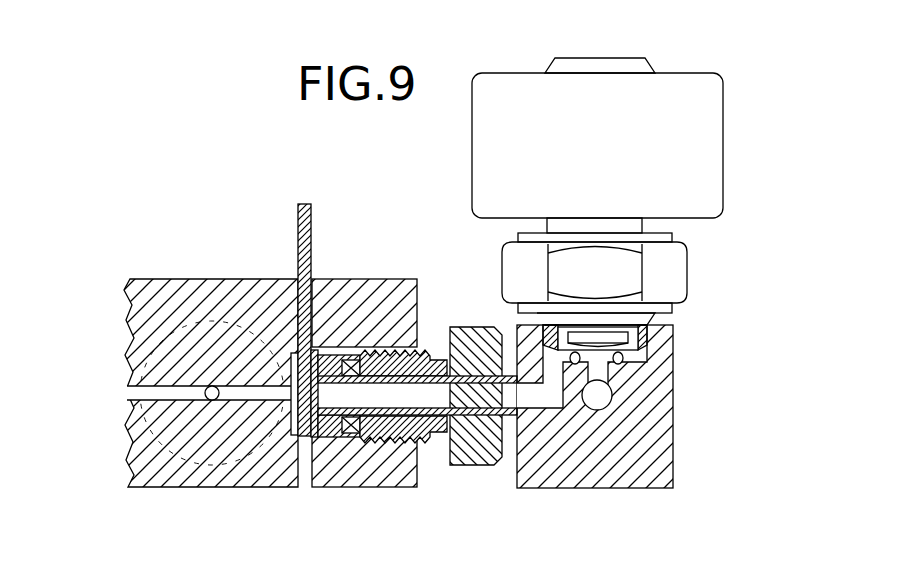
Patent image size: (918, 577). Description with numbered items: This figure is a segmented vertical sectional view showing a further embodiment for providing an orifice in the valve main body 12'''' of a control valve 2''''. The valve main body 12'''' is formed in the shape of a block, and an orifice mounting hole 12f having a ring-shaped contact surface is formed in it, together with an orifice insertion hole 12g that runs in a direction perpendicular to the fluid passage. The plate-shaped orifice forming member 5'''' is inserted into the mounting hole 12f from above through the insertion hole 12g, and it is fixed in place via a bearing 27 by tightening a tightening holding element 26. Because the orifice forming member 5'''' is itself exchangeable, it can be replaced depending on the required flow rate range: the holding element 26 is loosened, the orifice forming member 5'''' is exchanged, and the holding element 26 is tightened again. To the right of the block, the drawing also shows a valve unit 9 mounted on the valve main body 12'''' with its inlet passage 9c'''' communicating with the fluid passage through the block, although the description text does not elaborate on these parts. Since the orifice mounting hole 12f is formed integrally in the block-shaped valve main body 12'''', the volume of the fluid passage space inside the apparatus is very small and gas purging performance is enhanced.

The control valve 2'''' is at (272, 337).
The orifice forming member 5'''' is at (335, 304).
The valve 9 is at (627, 273).
The valve inlet passage with ball check 9c'''' is at (671, 380).
The valve main body 12'''' is at (272, 374).
The orifice mounting hole 12f is at (318, 440).
The orifice insertion hole 12g is at (323, 279).
The tightening holding element 26 is at (480, 465).
The bearing 27 is at (357, 447).